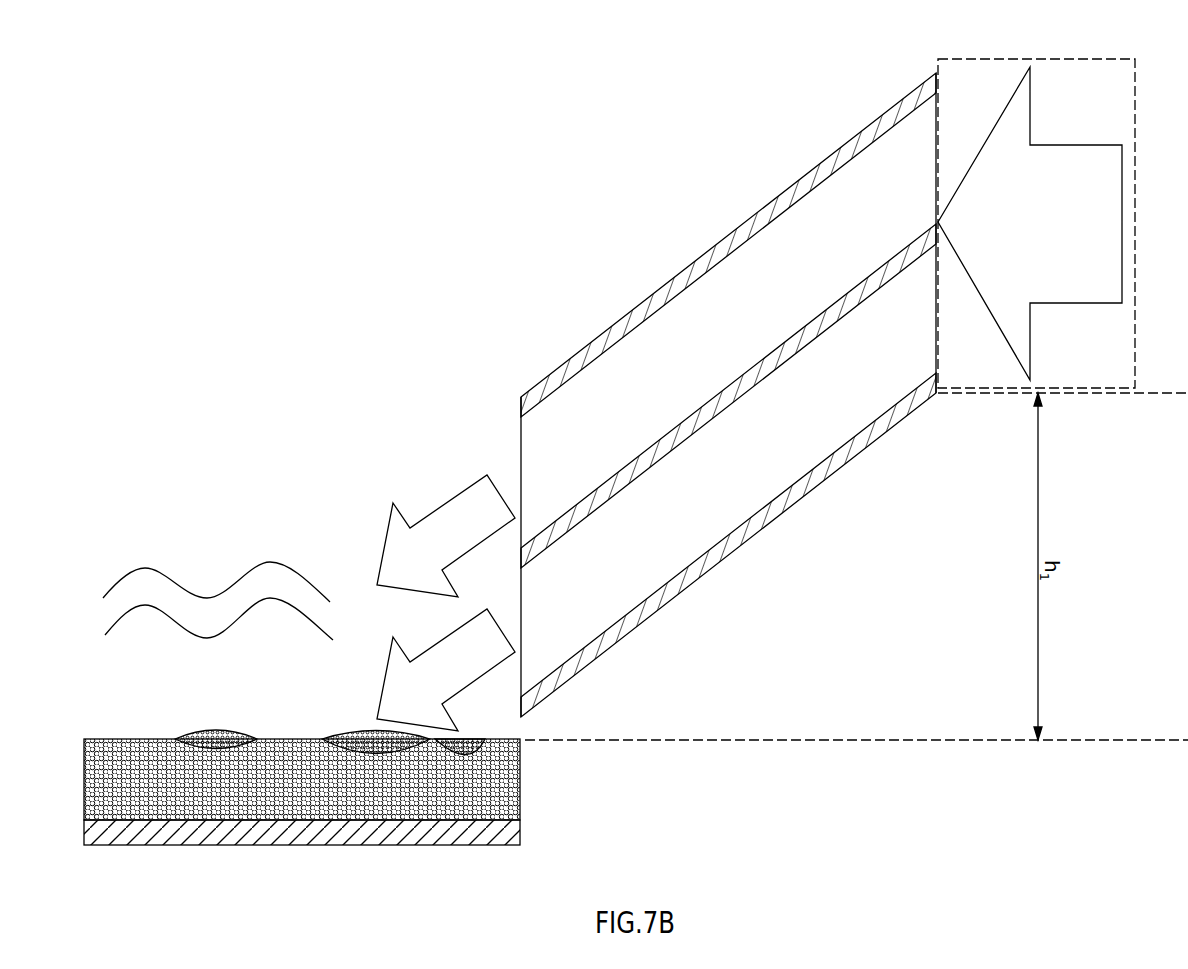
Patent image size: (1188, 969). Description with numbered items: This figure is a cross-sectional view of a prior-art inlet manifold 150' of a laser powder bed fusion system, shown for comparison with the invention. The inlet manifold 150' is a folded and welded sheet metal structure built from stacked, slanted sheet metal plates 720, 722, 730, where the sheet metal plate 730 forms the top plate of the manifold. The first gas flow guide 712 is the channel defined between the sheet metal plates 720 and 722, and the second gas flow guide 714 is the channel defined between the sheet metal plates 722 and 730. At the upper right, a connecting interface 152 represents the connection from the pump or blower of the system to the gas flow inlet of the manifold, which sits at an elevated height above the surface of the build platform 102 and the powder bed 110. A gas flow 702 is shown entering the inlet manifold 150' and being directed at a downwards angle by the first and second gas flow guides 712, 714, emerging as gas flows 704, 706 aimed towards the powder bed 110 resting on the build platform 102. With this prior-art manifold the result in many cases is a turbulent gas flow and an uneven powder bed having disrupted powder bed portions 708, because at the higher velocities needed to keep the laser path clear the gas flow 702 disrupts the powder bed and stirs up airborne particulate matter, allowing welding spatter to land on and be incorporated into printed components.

The connecting interface 152 is at (1088, 58).
The gas flow 702 is at (1056, 145).
The inlet manifold 150' is at (696, 395).
The sheet metal plate 730 is at (727, 236).
The sheet metal plate 722 is at (673, 430).
The sheet metal plate 720 is at (677, 577).
The second gas flow guide 714 is at (514, 447).
The first gas flow guide 712 is at (543, 613).
The gas flow 704 is at (382, 557).
The gas flow 706 is at (380, 694).
The powder bed 110 is at (101, 722).
The disrupted powder bed portions 708 is at (367, 737).
The build platform 102 is at (190, 845).